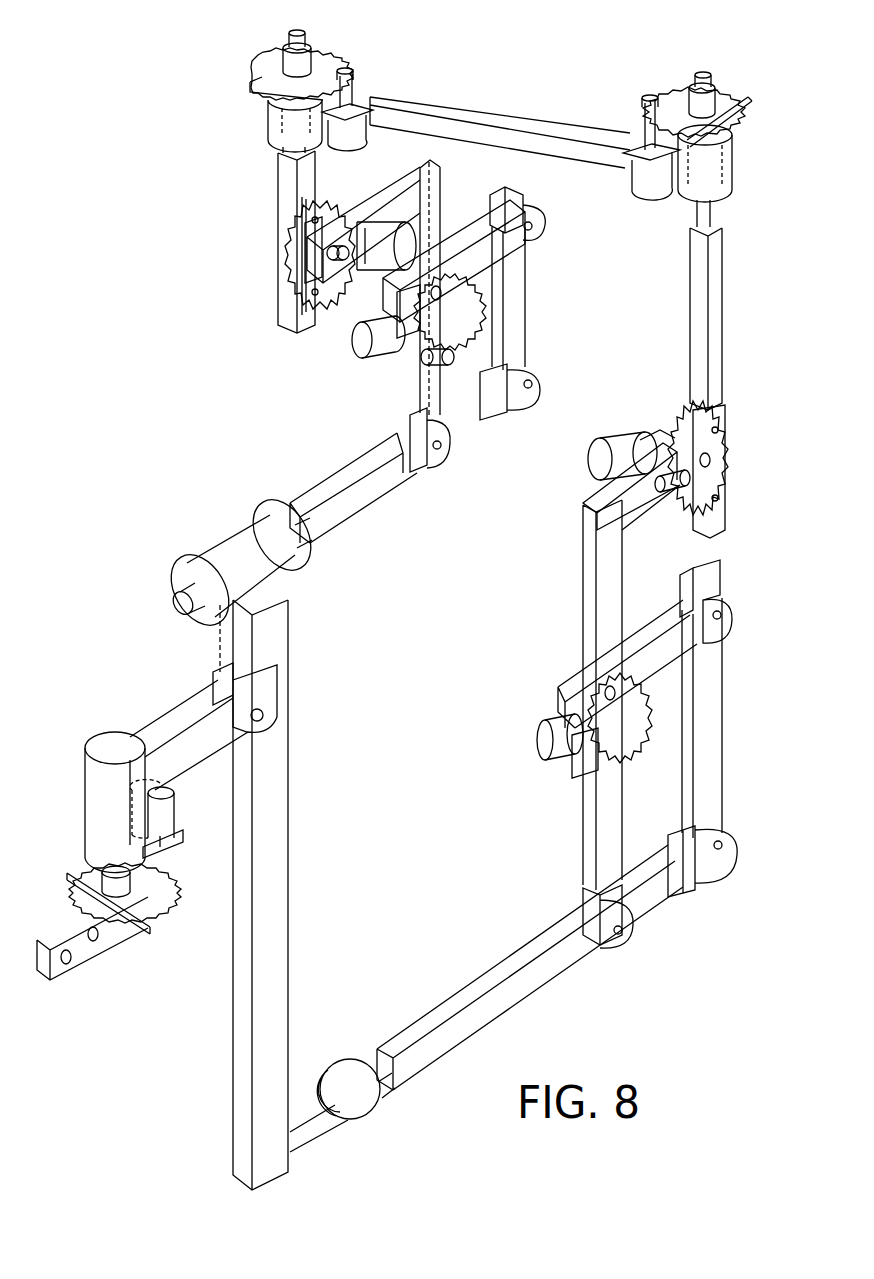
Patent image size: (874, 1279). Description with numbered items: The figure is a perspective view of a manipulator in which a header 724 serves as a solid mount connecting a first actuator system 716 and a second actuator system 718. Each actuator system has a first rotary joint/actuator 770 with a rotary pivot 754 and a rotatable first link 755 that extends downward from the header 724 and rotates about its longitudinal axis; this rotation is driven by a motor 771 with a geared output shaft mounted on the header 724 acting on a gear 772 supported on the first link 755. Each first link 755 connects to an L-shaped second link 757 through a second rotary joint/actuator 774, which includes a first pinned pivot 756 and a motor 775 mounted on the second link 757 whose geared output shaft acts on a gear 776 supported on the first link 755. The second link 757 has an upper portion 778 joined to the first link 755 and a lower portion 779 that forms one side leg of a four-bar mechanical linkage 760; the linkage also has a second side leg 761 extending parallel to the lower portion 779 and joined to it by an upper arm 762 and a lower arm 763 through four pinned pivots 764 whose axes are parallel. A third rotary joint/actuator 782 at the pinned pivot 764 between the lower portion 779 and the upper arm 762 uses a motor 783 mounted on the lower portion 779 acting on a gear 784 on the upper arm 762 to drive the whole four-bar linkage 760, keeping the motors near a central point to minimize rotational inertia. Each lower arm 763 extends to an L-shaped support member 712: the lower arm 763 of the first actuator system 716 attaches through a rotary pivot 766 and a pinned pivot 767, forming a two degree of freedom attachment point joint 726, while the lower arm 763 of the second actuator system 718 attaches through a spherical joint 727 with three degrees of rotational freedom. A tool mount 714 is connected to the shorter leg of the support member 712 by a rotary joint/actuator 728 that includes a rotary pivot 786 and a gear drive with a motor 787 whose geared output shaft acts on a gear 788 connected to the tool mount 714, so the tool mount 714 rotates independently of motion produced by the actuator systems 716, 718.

The support member 712 is at (280, 778).
The tool mount 714 is at (80, 950).
The first actuator system 716 is at (232, 186).
The second actuator system 718 is at (548, 560).
The header 724 is at (490, 108).
The attachment point joint 726 is at (195, 525).
The spherical joint 727 is at (333, 1055).
The rotary joint/actuator 728 is at (78, 742).
The rotary pivot 754 is at (278, 50).
The first link 755 is at (282, 165).
The first pinned pivot 756 is at (328, 253).
The second link 757 is at (437, 228).
The four-bar mechanical linkage 760 is at (370, 372).
The second side leg 761 is at (528, 343).
The upper arm 762 is at (480, 262).
The lower arm 763 is at (318, 483).
The pinned pivot 764 is at (530, 222).
The rotary pivot 766 is at (280, 565).
The pinned pivot 767 is at (265, 712).
The first rotary joint/actuator 770 is at (265, 112).
The motor 771 is at (365, 112).
The gear 772 is at (338, 62).
The second rotary joint/actuator 774 is at (290, 292).
The motor 775 is at (390, 220).
The gear 776 is at (330, 315).
The upper portion 778 is at (305, 225).
The lower portion 779 is at (437, 230).
The third rotary joint/actuator 782 is at (398, 372).
The motor 783 is at (540, 730).
The gear 784 is at (640, 718).
The rotary pivot 786 is at (95, 812).
The motor 787 is at (380, 350).
The gear 788 is at (445, 365).